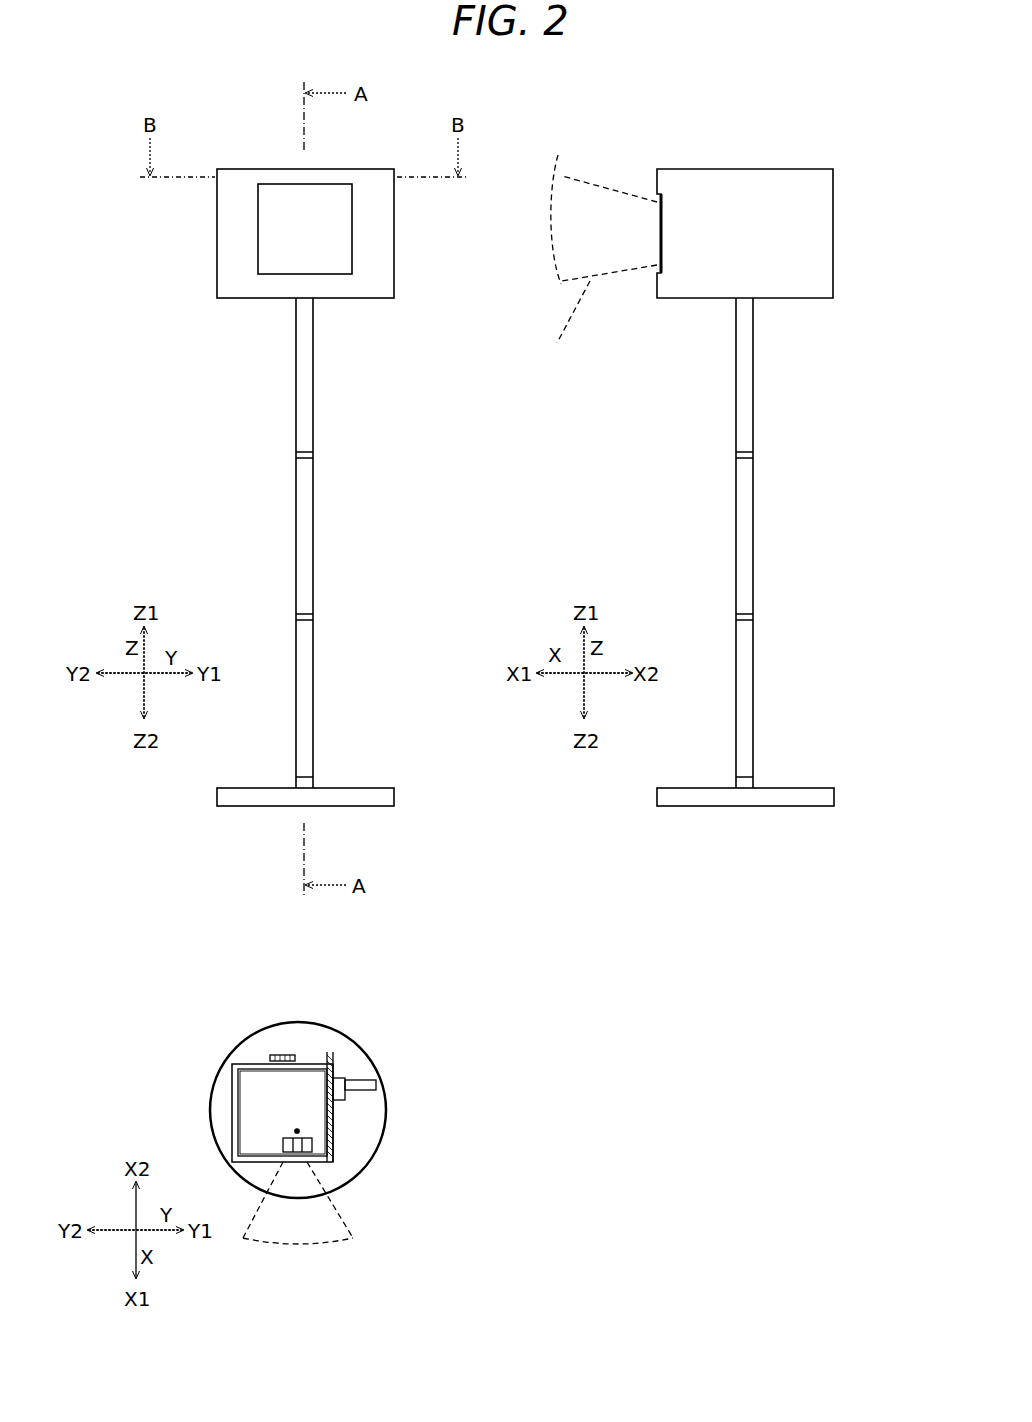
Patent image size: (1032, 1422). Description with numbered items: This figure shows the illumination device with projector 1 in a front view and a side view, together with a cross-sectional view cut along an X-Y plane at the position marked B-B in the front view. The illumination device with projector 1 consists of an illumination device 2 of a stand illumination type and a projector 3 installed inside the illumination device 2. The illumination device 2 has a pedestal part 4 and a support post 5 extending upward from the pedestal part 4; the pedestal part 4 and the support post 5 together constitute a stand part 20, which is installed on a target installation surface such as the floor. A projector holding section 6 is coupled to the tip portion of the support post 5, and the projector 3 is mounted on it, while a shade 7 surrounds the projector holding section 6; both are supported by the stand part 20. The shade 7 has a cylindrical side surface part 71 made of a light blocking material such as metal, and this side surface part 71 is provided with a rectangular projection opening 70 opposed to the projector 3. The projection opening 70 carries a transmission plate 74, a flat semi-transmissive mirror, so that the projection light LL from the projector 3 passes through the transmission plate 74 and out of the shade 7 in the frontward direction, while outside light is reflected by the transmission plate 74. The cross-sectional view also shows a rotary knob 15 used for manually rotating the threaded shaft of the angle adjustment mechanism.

The illumination device with projector 1 is at (246, 120).
The illumination device 2 is at (249, 166).
The projector 3 is at (251, 1097).
The pedestal part 4 is at (254, 787).
The support post 5 is at (301, 485).
The projector holding section 6 is at (333, 1132).
The shade 7 is at (217, 228).
The rotary knob 15 is at (283, 1055).
The stand part 20 is at (218, 498).
The projection opening 70 is at (264, 226).
The side surface part 71 is at (384, 226).
The transmission plate 74 is at (274, 260).
The projection light LL is at (333, 1217).